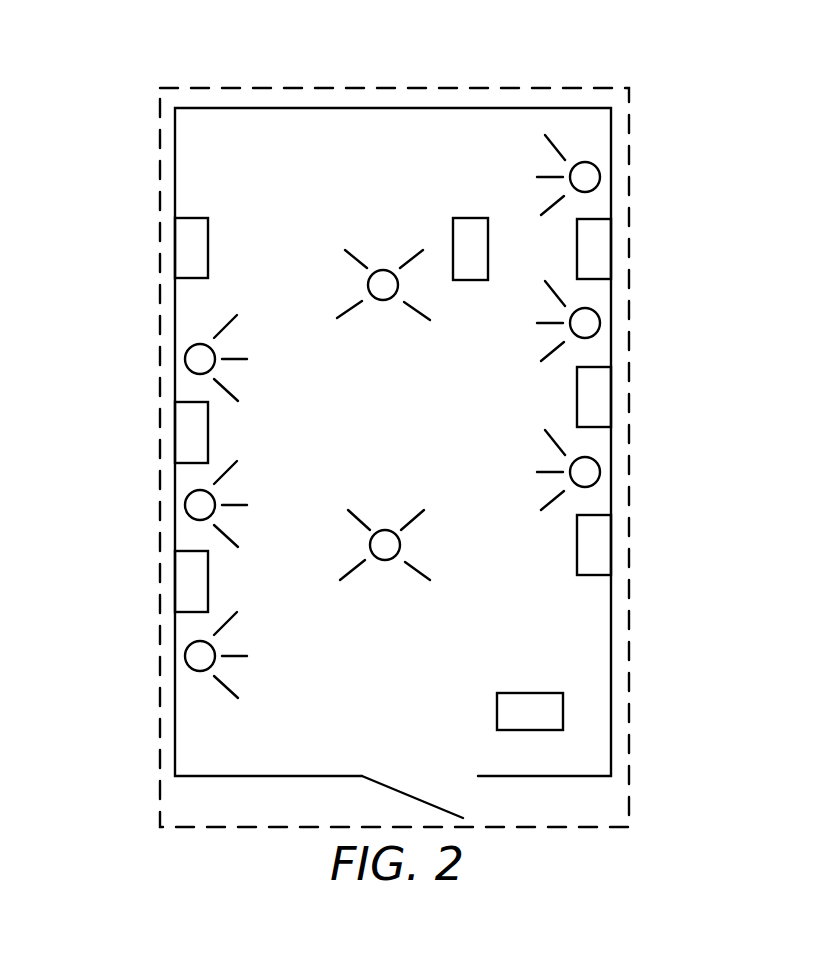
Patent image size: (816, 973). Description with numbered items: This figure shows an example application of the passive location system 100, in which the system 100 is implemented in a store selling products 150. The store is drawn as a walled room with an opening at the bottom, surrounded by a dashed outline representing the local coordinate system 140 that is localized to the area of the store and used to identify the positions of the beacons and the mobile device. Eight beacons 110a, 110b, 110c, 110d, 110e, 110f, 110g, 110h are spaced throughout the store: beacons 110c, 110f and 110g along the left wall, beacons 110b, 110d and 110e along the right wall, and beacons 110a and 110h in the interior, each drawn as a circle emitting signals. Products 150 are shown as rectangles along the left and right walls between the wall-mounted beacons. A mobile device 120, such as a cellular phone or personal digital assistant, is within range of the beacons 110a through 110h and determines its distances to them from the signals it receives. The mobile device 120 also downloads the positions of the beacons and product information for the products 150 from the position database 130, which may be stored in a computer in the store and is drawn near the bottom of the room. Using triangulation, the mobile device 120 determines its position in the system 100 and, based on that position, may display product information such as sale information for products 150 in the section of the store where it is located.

The passive location system 100 is at (377, 68).
The local coordinate system 140 is at (160, 163).
The products 150 is at (175, 250).
The mobile device 120 is at (453, 232).
The position database 130 is at (497, 713).
The beacon 110a is at (386, 301).
The beacon 110b is at (600, 177).
The beacon 110c is at (185, 359).
The beacon 110d is at (600, 323).
The beacon 110e is at (600, 472).
The beacon 110f is at (185, 505).
The beacon 110g is at (185, 656).
The beacon 110h is at (388, 561).